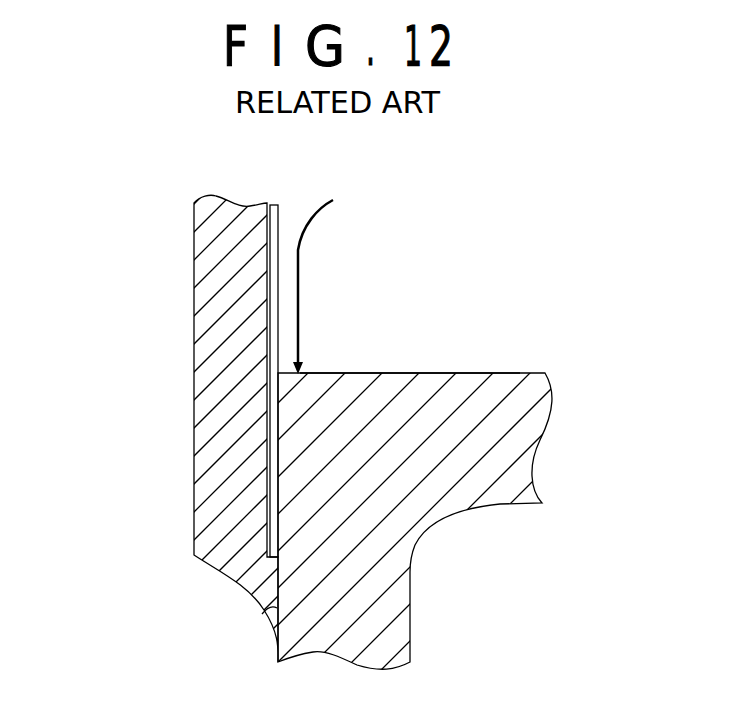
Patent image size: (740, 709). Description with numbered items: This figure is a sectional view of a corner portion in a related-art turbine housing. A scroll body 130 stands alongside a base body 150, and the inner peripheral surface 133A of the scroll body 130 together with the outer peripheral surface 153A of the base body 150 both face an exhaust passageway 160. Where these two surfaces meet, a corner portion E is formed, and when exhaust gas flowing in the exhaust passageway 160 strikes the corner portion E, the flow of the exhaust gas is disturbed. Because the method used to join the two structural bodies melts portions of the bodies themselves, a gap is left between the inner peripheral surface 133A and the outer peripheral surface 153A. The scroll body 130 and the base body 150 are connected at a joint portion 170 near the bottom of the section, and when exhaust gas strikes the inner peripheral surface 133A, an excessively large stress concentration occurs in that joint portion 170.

The scroll body 130 is at (194, 270).
The inner peripheral surface 133A is at (268, 222).
The base body 150 is at (570, 328).
The outer peripheral surface 153A is at (440, 372).
The exhaust passageway 160 is at (500, 264).
The corner portion E is at (341, 313).
The joint portion 170 is at (270, 607).